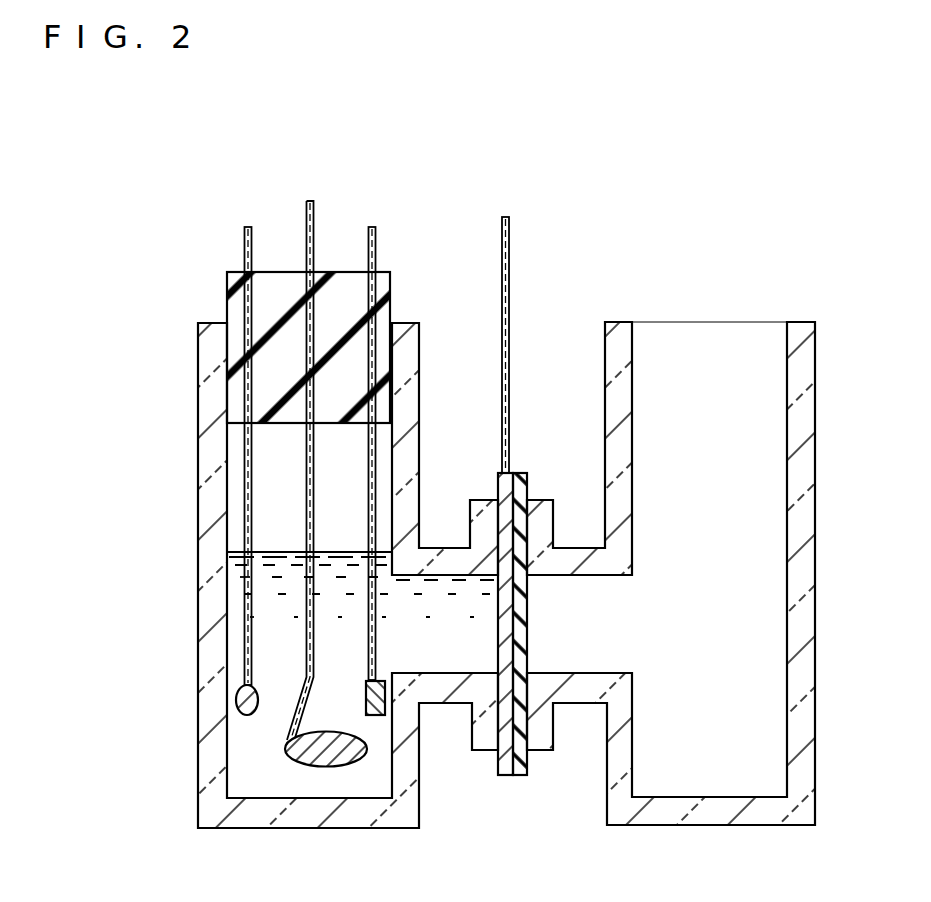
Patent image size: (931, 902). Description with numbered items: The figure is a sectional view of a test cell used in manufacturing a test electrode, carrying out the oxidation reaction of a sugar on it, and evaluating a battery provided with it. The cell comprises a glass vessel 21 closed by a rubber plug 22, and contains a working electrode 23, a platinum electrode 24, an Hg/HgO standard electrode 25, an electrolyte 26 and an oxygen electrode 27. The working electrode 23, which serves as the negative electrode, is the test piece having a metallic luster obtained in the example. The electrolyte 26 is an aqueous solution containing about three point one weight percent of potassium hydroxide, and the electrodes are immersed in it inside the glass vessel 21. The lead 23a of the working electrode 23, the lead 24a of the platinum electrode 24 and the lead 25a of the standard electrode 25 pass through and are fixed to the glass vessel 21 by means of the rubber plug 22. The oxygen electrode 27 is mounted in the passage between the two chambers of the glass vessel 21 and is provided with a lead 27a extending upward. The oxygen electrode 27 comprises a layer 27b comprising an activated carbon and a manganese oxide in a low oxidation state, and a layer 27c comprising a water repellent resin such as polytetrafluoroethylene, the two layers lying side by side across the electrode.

The glass vessel 21 is at (803, 590).
The rubber plug 22 is at (278, 290).
The working electrode 23 is at (387, 702).
The lead of the working electrode 23a is at (377, 452).
The platinum electrode 24 is at (325, 767).
The lead of the platinum electrode 24a is at (305, 513).
The Hg/HgO standard electrode 25 is at (236, 700).
The lead of the standard electrode 25a is at (248, 445).
The electrolyte 26 is at (273, 605).
The oxygen electrode 27 is at (519, 678).
The lead of the oxygen electrode 27a is at (509, 313).
The layer comprising activated carbon and manganese oxide 27b is at (508, 776).
The layer comprising water repellent resin 27c is at (546, 653).